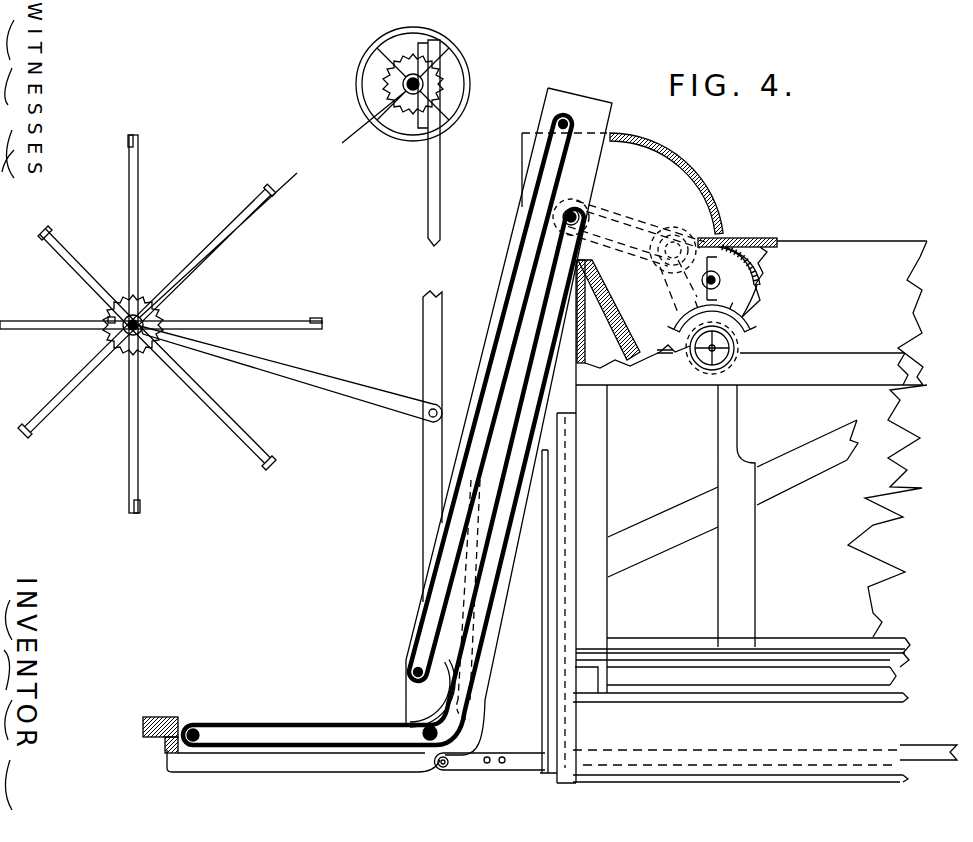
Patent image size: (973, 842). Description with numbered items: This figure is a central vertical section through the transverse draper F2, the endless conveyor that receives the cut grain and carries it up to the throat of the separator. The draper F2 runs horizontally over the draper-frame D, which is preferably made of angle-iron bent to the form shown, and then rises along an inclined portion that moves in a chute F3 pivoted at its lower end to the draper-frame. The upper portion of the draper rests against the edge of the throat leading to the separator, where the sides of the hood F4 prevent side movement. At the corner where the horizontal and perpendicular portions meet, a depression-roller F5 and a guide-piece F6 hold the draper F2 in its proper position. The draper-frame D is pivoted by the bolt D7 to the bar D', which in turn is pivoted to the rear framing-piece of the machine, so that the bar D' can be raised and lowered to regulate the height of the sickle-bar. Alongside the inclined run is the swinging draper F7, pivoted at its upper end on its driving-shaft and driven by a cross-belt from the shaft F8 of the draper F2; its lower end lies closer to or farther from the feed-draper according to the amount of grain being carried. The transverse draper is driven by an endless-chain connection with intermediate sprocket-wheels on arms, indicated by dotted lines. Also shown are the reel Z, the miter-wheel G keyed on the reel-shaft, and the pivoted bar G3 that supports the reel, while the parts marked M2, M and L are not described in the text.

The reel Z is at (130, 218).
The miter-wheel G is at (122, 356).
The pivoted bar G3 is at (327, 398).
The shaft of the draper F8 is at (587, 118).
The swinging draper F7 is at (425, 623).
The chute F3 is at (430, 695).
The transverse draper F2 is at (570, 197).
The guide-piece F6 is at (430, 707).
The depression-roller F5 is at (450, 733).
The draper-frame D is at (303, 777).
The bolt D7 is at (443, 767).
The bar D' is at (490, 776).
The hood F4 is at (677, 248).
The bracket M2 is at (757, 267).
The shaft M is at (722, 282).
The segment gear L is at (670, 327).